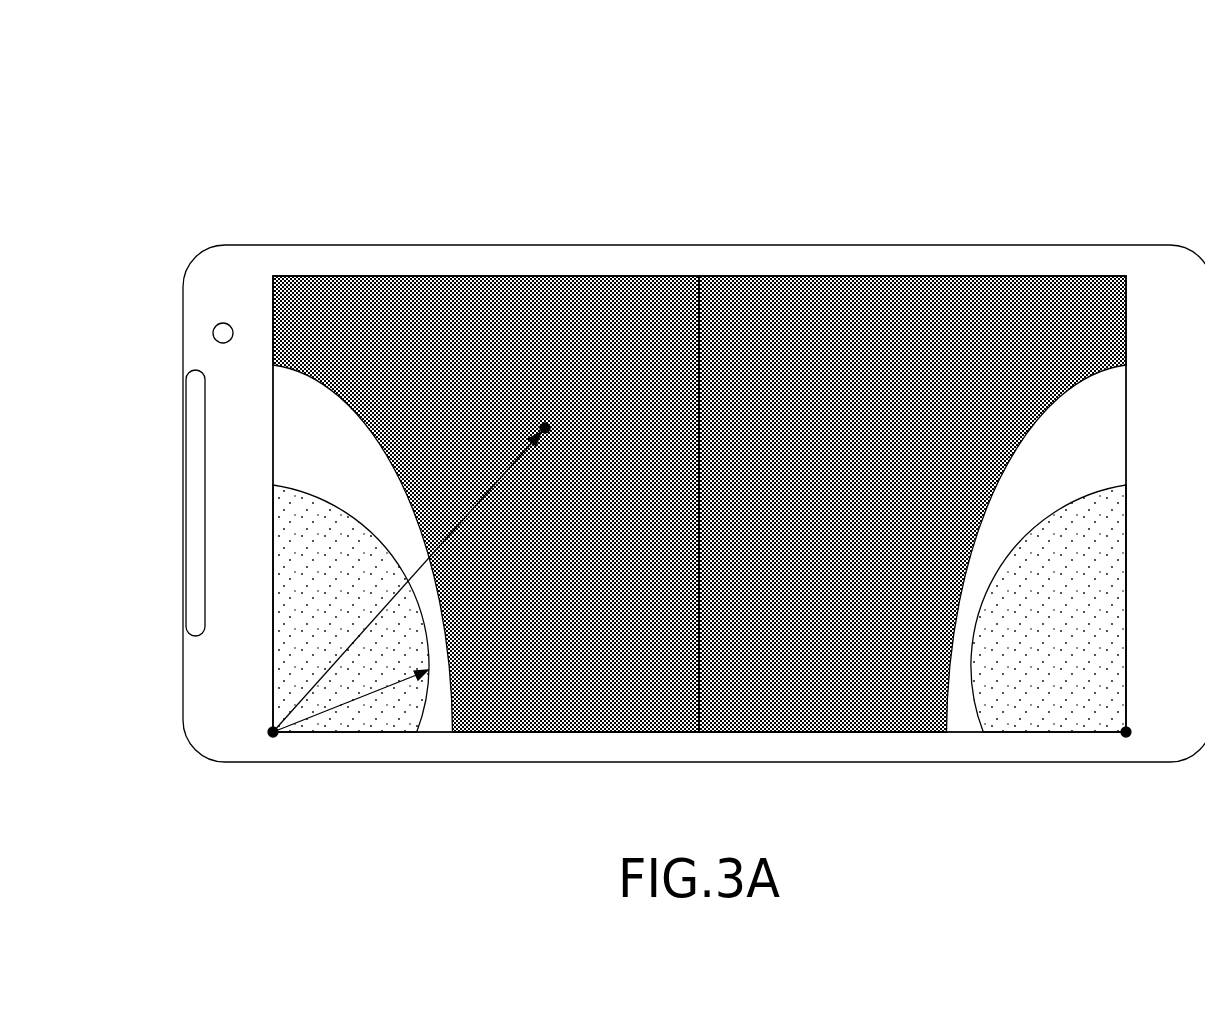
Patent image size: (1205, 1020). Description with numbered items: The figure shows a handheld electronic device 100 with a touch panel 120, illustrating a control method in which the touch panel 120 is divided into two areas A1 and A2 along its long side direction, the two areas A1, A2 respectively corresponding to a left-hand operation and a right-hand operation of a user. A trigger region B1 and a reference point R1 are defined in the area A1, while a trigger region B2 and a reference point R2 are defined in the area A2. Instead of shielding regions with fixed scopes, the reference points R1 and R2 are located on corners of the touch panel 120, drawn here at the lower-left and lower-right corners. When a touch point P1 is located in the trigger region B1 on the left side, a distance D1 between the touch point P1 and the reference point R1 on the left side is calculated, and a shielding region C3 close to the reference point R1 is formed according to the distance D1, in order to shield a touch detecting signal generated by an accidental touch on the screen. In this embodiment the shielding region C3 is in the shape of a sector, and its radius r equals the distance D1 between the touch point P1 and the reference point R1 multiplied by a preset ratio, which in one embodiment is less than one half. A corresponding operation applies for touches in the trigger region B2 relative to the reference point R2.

The handheld electronic device 100 is at (226, 135).
The touch panel 120 is at (512, 138).
The area A1 is at (505, 271).
The area A2 is at (850, 271).
The trigger region B1 is at (486, 504).
The trigger region B2 is at (912, 504).
The shielding region C3 is at (351, 608).
The distance D1 is at (497, 477).
The touch point P1 is at (568, 422).
The reference point R1 is at (272, 738).
The reference point R2 is at (1126, 738).
The radius r is at (360, 699).